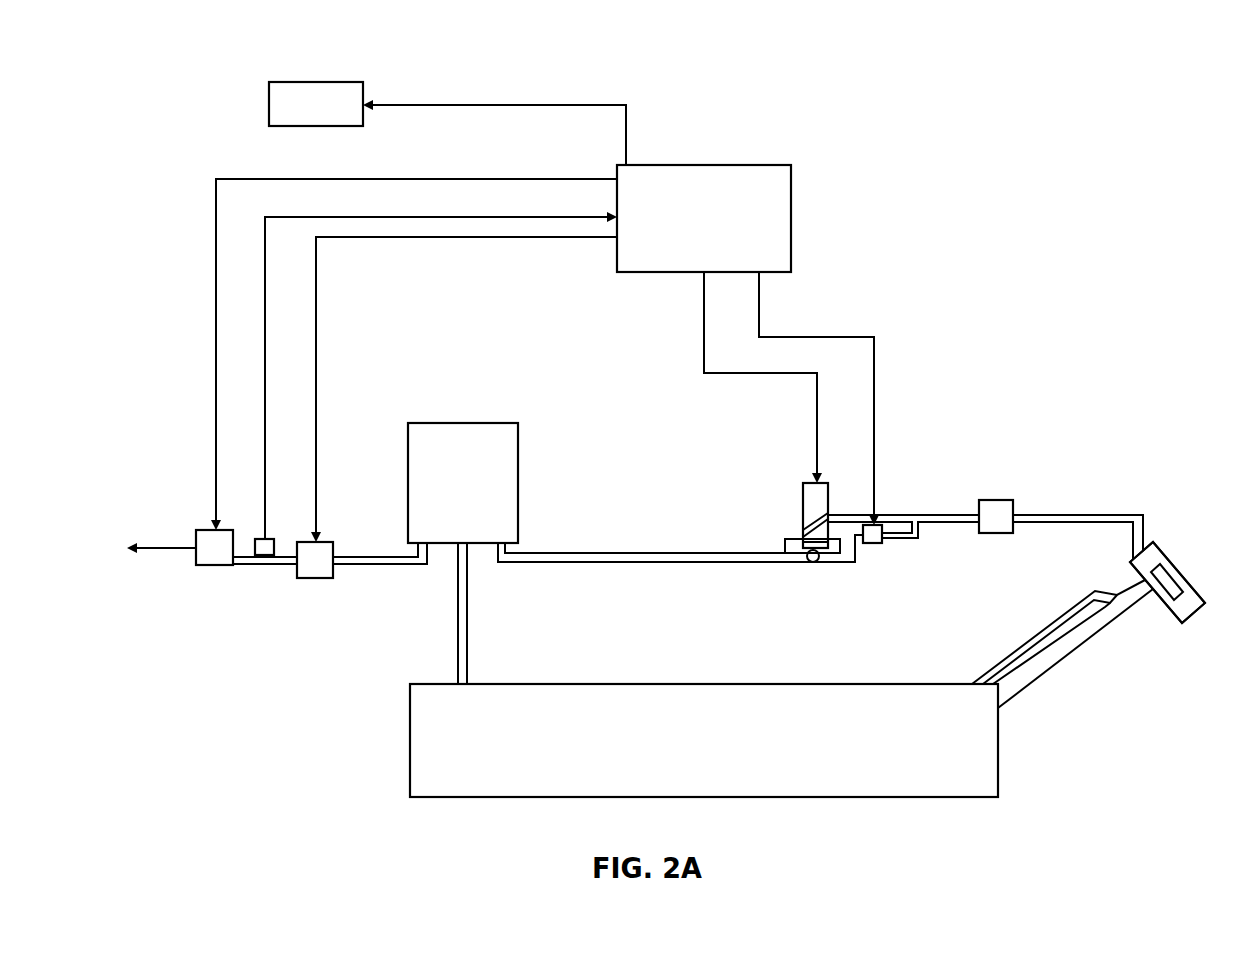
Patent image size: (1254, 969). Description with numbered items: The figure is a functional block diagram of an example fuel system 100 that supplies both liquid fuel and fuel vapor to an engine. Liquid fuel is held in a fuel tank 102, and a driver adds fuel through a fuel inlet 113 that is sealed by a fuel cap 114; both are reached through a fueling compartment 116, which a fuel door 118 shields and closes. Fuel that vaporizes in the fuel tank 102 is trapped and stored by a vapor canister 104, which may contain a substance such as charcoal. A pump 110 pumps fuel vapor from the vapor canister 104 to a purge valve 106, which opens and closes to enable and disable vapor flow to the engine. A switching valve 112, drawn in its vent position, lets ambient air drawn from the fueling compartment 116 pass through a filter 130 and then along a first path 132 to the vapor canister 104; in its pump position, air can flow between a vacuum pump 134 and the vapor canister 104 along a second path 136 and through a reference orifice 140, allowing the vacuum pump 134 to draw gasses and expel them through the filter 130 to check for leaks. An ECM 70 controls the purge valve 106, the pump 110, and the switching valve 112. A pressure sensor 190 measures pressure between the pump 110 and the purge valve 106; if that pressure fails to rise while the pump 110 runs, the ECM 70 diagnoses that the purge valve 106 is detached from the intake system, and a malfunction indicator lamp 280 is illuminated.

The fuel system 100 is at (130, 44).
The malfunction indicator lamp 280 is at (313, 82).
The ECM 70 is at (700, 165).
The vapor canister 104 is at (520, 447).
The purge valve 106 is at (204, 530).
The pressure sensor 190 is at (255, 556).
The pump 110 is at (312, 578).
The switching valve 112 is at (810, 483).
The first path 132 is at (803, 531).
The vacuum pump 134 is at (876, 525).
The second path 136 is at (793, 554).
The reference orifice 140 is at (815, 562).
The filter 130 is at (1000, 500).
The fuel door 118 is at (1186, 581).
The fueling compartment 116 is at (1200, 604).
The fuel cap 114 is at (1178, 598).
The fuel inlet 113 is at (1142, 598).
The fuel tank 102 is at (703, 684).